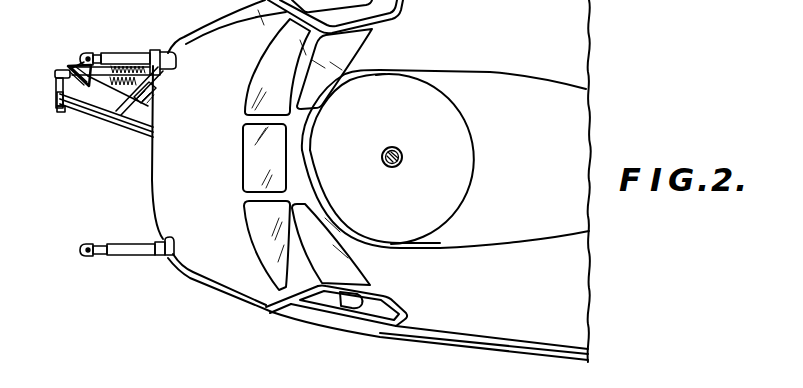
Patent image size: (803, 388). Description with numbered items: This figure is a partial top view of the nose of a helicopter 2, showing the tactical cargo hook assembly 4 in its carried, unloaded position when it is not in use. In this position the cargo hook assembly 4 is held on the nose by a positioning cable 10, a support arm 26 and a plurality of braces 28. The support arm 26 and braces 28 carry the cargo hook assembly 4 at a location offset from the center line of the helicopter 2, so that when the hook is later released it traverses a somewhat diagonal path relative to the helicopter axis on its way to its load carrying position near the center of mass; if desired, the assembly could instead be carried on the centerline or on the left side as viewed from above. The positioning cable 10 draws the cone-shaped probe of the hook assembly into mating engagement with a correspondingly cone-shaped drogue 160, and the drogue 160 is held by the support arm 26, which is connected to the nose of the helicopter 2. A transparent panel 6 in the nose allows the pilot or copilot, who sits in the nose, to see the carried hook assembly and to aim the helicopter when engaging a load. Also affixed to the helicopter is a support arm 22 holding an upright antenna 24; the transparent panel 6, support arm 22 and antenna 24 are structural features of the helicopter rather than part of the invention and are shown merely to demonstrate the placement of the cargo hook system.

The helicopter 2 is at (371, 181).
The cargo hook assembly 4 is at (154, 50).
The transparent panel 6 is at (230, 295).
The positioning cable 10 is at (118, 130).
The support arm 22 is at (125, 56).
The antenna 24 is at (94, 51).
The support arm 26 is at (95, 108).
The braces 28 is at (153, 110).
The drogue 160 is at (76, 58).